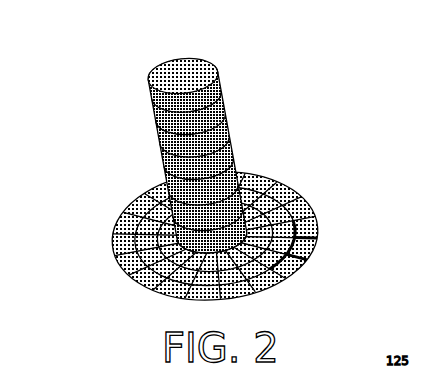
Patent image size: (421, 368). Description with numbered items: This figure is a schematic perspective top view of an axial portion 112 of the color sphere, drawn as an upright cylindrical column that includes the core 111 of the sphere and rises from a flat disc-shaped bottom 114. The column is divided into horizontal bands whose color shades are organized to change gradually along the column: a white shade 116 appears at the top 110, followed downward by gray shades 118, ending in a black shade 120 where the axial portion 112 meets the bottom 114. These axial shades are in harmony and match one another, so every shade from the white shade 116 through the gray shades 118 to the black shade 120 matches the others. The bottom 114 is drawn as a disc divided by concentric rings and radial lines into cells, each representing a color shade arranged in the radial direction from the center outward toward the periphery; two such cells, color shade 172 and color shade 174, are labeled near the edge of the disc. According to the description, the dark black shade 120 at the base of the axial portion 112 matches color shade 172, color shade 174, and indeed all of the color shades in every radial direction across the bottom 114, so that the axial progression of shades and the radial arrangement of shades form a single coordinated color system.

The top 110 is at (195, 141).
The core 111 is at (178, 173).
The axial portion 112 is at (266, 88).
The bottom 114 is at (312, 207).
The white shade 116 is at (192, 63).
The gray shades 118 is at (232, 135).
The black shade 120 is at (262, 195).
The color shade 172 is at (310, 248).
The color shade 174 is at (293, 267).